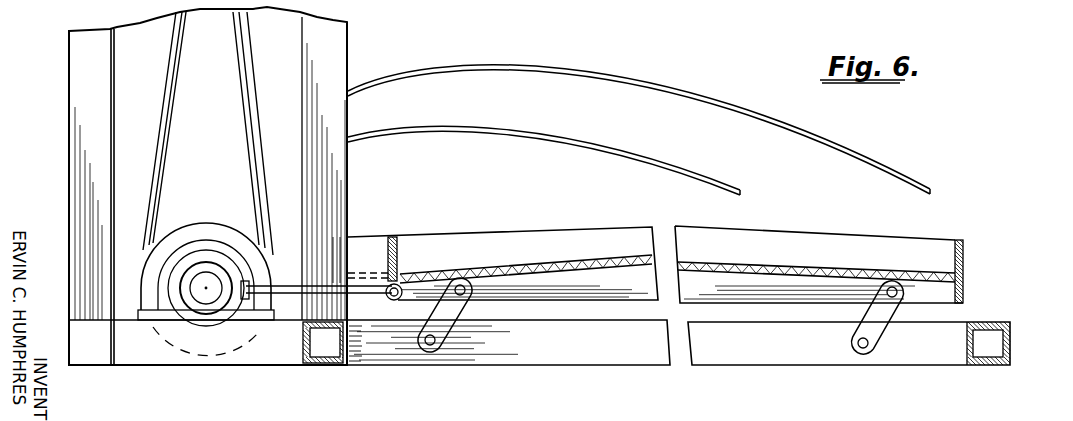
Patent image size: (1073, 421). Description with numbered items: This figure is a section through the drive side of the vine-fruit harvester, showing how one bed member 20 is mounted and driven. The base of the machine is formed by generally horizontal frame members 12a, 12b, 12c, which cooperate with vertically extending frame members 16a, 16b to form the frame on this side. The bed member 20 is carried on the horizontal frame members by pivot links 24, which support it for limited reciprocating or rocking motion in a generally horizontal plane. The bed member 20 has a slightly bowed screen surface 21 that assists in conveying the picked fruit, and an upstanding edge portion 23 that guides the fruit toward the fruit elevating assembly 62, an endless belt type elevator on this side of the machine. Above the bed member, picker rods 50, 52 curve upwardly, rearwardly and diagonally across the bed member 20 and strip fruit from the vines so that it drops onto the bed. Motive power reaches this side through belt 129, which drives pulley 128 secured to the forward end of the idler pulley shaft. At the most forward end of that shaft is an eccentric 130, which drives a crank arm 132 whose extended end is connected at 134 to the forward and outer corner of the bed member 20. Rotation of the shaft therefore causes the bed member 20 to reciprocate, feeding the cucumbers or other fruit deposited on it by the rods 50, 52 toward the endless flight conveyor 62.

The fruit elevating assembly 62 is at (58, 47).
The vertical frame member 16a is at (85, 166).
The vertical frame member 16b is at (348, 191).
The belt 129 is at (244, 109).
The pulley 128 is at (193, 228).
The eccentric 130 is at (204, 300).
The crank arm 132 is at (287, 294).
The horizontal frame member 12a is at (322, 366).
The horizontal frame member 12b is at (581, 356).
The horizontal frame member 12c is at (1011, 340).
The upstanding edge portion 23 is at (392, 242).
The connection of crank arm to bed member 134 is at (403, 280).
The pivot link 24 is at (455, 323).
The bed member 20 is at (784, 229).
The screen surface 21 is at (825, 270).
The picker rod 50 is at (604, 74).
The picker rod 52 is at (601, 150).